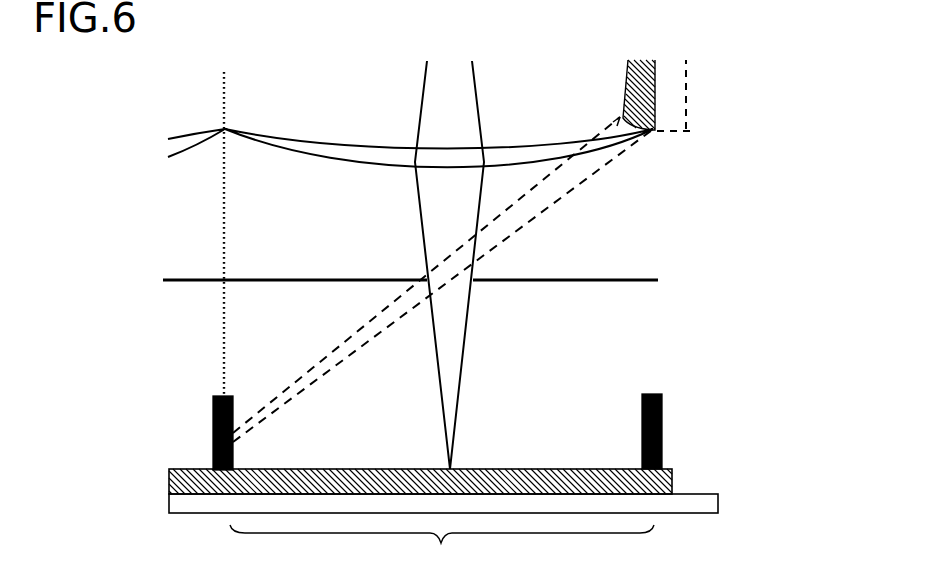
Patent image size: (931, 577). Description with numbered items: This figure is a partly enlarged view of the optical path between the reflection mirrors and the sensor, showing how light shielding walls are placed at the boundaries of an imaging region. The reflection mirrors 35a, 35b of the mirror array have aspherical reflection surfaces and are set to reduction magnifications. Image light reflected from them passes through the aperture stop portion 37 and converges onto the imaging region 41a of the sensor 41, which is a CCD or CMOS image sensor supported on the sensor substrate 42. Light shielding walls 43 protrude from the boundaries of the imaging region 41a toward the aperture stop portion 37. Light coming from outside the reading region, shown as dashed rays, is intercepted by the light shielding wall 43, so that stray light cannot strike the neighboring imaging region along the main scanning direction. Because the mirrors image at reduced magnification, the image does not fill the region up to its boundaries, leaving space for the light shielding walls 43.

The reflection mirror 35a is at (285, 138).
The reflection mirror 35b is at (182, 138).
The aperture stop portion 37 is at (475, 283).
The sensor 41 is at (674, 482).
The imaging region 41a is at (442, 551).
The sensor substrate 42 is at (707, 493).
The light shielding wall 43 is at (213, 400).